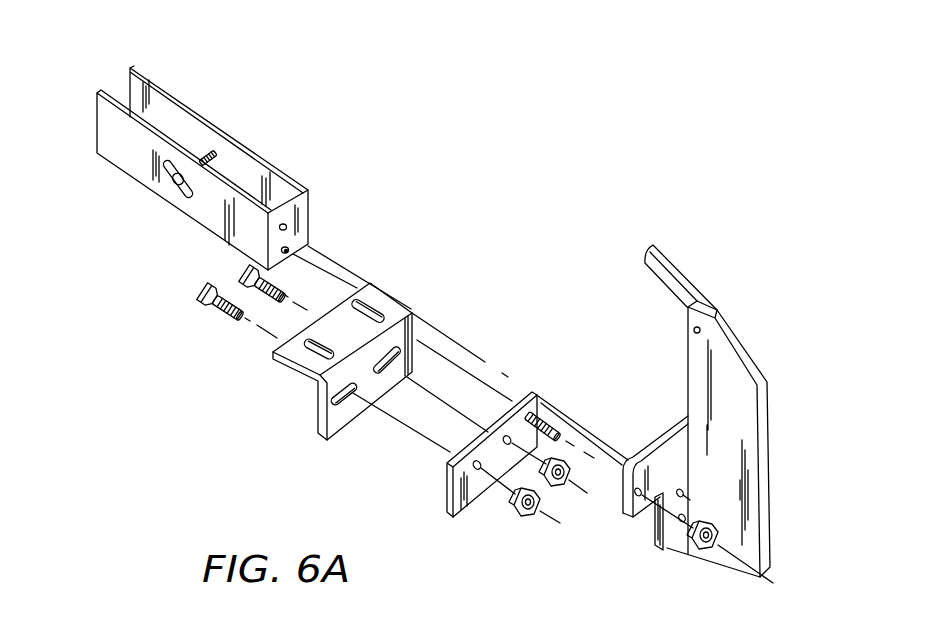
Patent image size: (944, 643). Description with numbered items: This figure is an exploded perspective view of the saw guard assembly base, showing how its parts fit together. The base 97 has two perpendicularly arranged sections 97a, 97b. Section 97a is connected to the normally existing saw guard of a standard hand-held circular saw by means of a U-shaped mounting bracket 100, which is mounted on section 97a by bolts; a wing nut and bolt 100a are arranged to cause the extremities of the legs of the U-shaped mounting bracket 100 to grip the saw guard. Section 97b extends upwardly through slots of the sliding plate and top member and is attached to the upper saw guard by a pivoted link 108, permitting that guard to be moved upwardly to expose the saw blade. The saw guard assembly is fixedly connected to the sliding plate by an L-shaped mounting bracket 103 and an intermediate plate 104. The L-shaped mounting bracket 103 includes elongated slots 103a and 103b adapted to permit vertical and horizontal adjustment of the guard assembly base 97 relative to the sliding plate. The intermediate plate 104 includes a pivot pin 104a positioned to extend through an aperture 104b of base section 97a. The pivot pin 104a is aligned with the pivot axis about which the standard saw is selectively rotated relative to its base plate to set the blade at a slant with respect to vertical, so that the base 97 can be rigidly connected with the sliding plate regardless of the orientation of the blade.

The U-shaped mounting bracket 100 is at (277, 165).
The wing nut and bolt 100a is at (177, 187).
The L-shaped mounting bracket 103 is at (398, 310).
The elongated slots 103a is at (322, 318).
The elongated slots 103b is at (390, 366).
The intermediate plate 104 is at (533, 392).
The pivot pin 104a is at (543, 410).
The aperture 104b is at (639, 517).
The base 97 is at (763, 367).
The base section 97a is at (663, 548).
The base section 97b is at (755, 465).
The pivoted link 108 is at (682, 287).